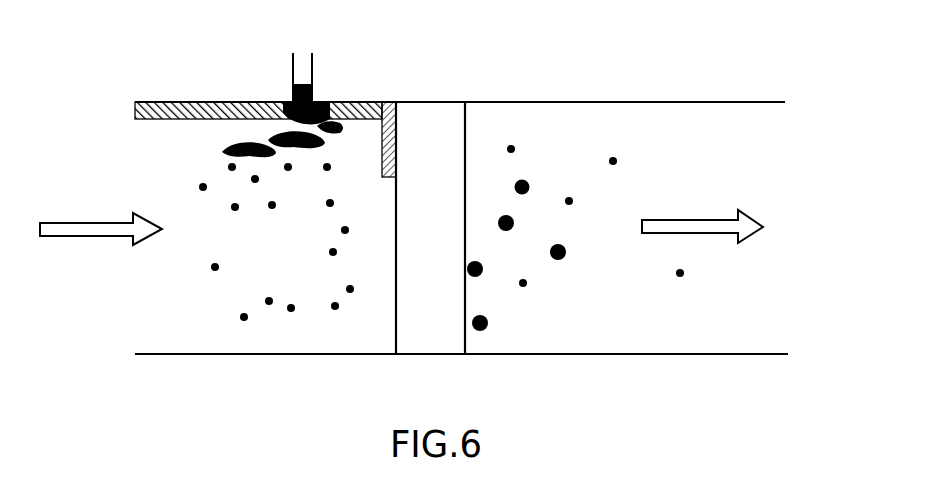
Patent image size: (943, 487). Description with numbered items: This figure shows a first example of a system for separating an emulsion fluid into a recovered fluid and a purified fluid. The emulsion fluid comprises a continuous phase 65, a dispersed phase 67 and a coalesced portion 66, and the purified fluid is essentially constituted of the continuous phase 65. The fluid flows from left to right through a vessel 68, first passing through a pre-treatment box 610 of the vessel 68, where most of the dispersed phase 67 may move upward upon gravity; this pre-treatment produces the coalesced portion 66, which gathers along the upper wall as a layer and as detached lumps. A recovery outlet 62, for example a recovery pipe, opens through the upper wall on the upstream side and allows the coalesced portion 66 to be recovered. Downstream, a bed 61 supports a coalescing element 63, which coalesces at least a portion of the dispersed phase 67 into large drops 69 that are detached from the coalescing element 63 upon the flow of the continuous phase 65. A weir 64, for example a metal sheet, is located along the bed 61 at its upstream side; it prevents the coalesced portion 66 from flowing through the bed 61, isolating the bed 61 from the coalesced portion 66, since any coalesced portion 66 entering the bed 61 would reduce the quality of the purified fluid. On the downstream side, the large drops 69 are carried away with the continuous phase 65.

The bed 61 is at (465, 130).
The recovery outlet 62 is at (312, 73).
The coalescing element 63 is at (425, 125).
The weir 64 is at (380, 157).
The continuous phase 65 is at (302, 263).
The coalesced portion 66 is at (172, 118).
The dispersed phase 67 is at (337, 310).
The vessel 68 is at (575, 102).
The large drops 69 is at (565, 258).
The pre-treatment box 610 is at (258, 354).